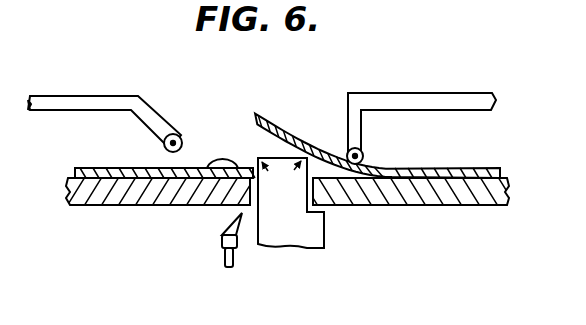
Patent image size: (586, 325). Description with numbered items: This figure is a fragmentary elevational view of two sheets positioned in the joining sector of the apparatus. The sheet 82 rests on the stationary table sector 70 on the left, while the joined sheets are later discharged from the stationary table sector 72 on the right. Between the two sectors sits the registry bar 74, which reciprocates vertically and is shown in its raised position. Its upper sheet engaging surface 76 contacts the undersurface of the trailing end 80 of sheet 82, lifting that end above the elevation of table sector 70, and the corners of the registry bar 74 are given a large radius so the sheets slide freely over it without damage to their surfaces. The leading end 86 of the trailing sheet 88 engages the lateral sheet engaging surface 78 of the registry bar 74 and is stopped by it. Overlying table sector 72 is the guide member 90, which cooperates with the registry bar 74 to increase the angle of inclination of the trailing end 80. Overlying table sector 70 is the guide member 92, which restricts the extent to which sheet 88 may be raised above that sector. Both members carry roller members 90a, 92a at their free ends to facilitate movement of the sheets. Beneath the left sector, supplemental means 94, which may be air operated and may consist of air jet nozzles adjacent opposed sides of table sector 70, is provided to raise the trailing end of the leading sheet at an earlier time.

The stationary table sector 70 is at (155, 206).
The stationary table sector 72 is at (429, 206).
The registry bar 74 is at (284, 237).
The upper sheet engaging surface 76 is at (266, 157).
The lateral sheet engaging surface 78 is at (223, 148).
The trailing end 80 is at (272, 117).
The sheet 82 is at (427, 168).
The leading end 86 is at (200, 177).
The trailing sheet 88 is at (130, 167).
The guide member 90 is at (361, 138).
The roller member 90a is at (343, 162).
The guide member 92 is at (160, 117).
The roller member 92a is at (179, 136).
The supplemental means 94 is at (221, 243).